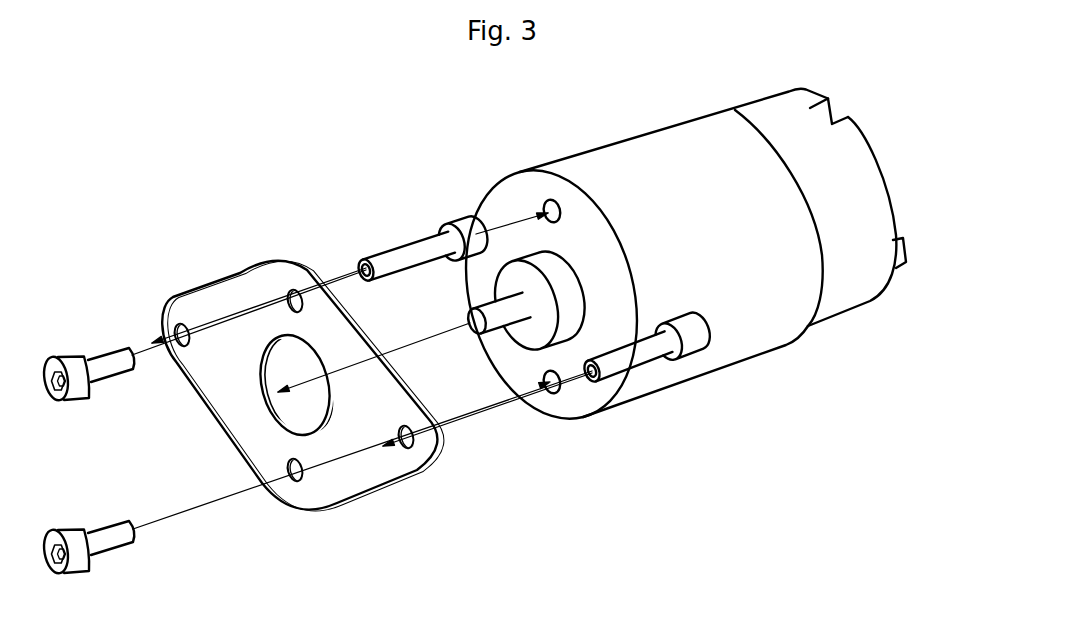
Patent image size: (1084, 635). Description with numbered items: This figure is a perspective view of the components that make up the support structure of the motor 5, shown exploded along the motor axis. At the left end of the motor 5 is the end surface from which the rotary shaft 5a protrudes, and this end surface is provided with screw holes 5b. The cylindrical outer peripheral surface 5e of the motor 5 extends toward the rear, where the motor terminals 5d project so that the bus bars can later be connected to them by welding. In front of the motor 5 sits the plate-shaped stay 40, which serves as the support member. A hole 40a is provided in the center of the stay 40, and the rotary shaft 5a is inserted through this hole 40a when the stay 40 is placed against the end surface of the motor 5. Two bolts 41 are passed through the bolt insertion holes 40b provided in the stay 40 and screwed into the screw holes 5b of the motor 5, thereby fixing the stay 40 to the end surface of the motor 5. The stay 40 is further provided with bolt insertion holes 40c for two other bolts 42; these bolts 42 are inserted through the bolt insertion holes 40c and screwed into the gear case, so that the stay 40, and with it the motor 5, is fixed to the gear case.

The motor 5 is at (619, 160).
The rotary shaft 5a is at (493, 310).
The screw holes 5b is at (545, 205).
The motor terminals 5d is at (906, 252).
The outer peripheral surface 5e is at (683, 143).
The stay 40 is at (207, 373).
The hole 40a is at (271, 409).
The bolt insertion holes 40b is at (289, 291).
The bolt insertion holes 40c is at (175, 325).
The bolts 41 is at (107, 361).
The bolts 42 is at (407, 251).